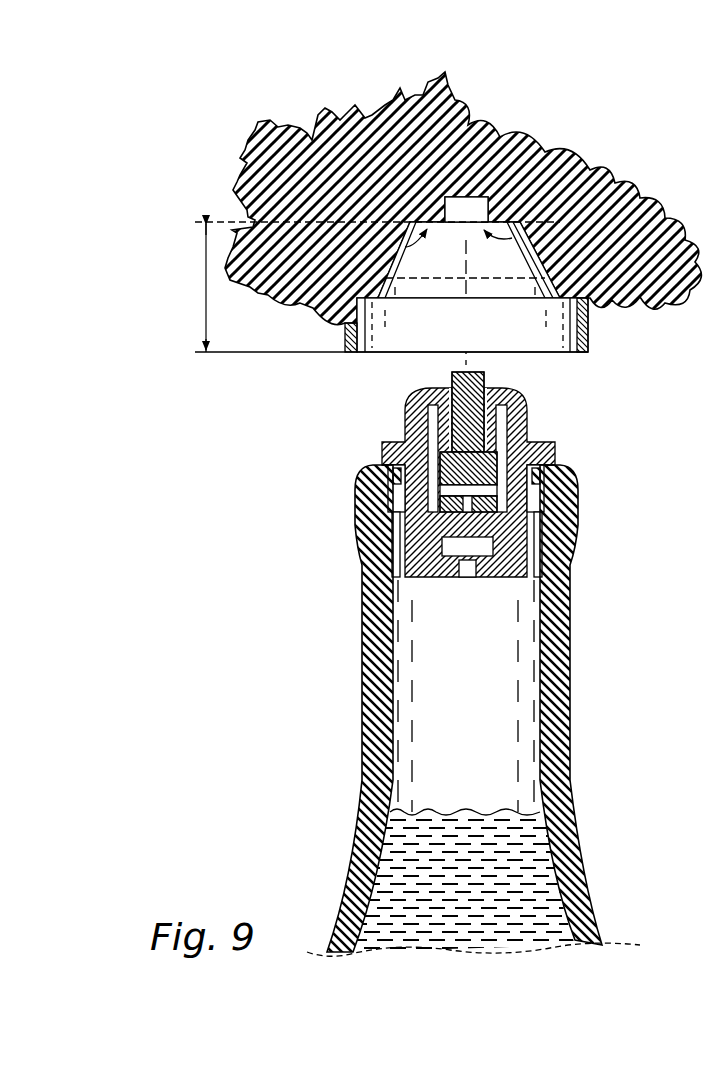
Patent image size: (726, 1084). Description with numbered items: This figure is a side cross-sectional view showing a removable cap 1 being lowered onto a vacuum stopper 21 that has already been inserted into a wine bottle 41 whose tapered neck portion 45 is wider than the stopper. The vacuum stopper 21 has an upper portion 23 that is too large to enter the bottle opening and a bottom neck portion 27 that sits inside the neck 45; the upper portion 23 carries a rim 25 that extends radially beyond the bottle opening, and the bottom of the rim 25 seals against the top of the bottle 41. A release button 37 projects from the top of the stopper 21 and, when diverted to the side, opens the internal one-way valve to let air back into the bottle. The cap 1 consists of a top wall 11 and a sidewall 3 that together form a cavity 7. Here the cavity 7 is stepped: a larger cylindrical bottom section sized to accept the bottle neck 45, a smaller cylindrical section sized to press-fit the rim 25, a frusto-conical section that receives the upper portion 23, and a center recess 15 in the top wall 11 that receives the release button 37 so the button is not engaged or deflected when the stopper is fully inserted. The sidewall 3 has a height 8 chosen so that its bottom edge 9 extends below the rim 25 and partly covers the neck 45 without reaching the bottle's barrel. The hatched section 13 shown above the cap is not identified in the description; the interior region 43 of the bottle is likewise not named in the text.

The removable cap 1 is at (627, 110).
The sidewall 3 is at (489, 348).
The cavity 7 is at (408, 318).
The height 8 is at (206, 300).
The bottom edge 9 is at (580, 354).
The top wall 11 is at (400, 243).
The closure body 13 is at (392, 135).
The center recess 15 is at (538, 222).
The vacuum stopper 21 is at (475, 474).
The upper portion 23 is at (405, 433).
The rim 25 is at (382, 455).
The bottom neck portion 27 is at (548, 516).
The release button 37 is at (486, 384).
The wine bottle 41 is at (489, 710).
The container interior 43 is at (483, 745).
The tapered neck portion 45 is at (528, 686).